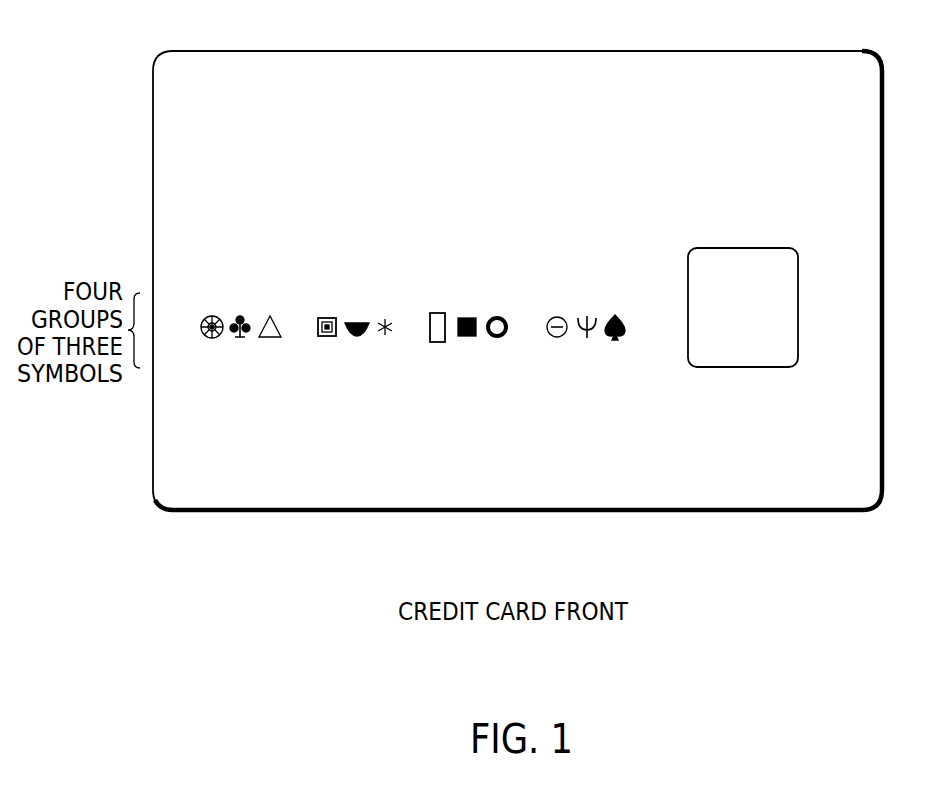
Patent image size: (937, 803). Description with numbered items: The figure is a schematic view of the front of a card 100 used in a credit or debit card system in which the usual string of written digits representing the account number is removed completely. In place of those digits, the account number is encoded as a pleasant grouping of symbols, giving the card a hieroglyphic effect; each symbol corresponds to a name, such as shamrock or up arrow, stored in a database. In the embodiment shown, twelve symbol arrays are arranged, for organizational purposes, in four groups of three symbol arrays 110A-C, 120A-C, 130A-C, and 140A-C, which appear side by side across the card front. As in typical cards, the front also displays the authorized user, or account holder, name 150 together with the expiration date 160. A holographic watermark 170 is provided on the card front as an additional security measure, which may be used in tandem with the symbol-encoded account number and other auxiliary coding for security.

The card 100 is at (480, 51).
The first group of three symbol arrays 110A-C is at (287, 296).
The second group of three symbol arrays 120A-C is at (400, 296).
The third group of three symbol arrays 130A-C is at (512, 296).
The fourth group of three symbol arrays 140A-C is at (628, 296).
The authorized user name 150 is at (297, 483).
The expiration date 160 is at (445, 430).
The holographic watermark 170 is at (740, 247).